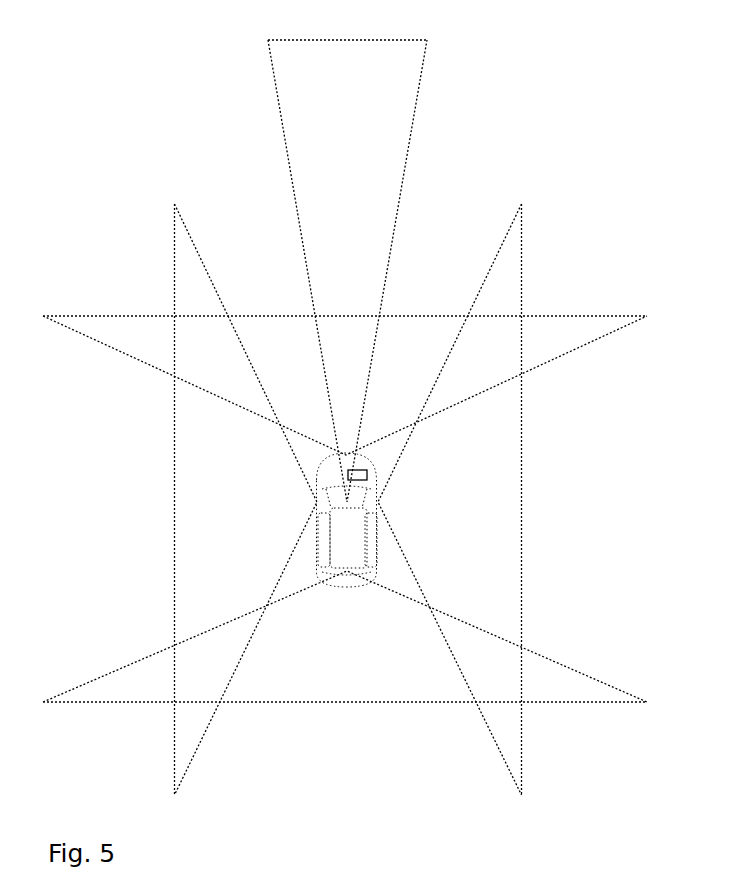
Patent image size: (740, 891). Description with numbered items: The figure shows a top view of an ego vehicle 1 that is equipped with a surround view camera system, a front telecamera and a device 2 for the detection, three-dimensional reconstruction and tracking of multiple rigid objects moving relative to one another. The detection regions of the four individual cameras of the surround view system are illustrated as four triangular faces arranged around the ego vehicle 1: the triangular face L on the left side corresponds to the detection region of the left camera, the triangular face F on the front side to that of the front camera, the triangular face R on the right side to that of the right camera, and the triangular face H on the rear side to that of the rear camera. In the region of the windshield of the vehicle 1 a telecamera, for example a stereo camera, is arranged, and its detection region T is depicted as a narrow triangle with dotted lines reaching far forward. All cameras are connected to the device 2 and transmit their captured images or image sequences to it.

The ego vehicle 1 is at (352, 555).
The device 2 is at (367, 480).
The detection region of the telecamera T is at (340, 69).
The triangular face on the front side F is at (279, 366).
The triangular face on the left side L is at (258, 531).
The triangular face on the right side R is at (439, 533).
The triangular face on the rear side H is at (276, 685).